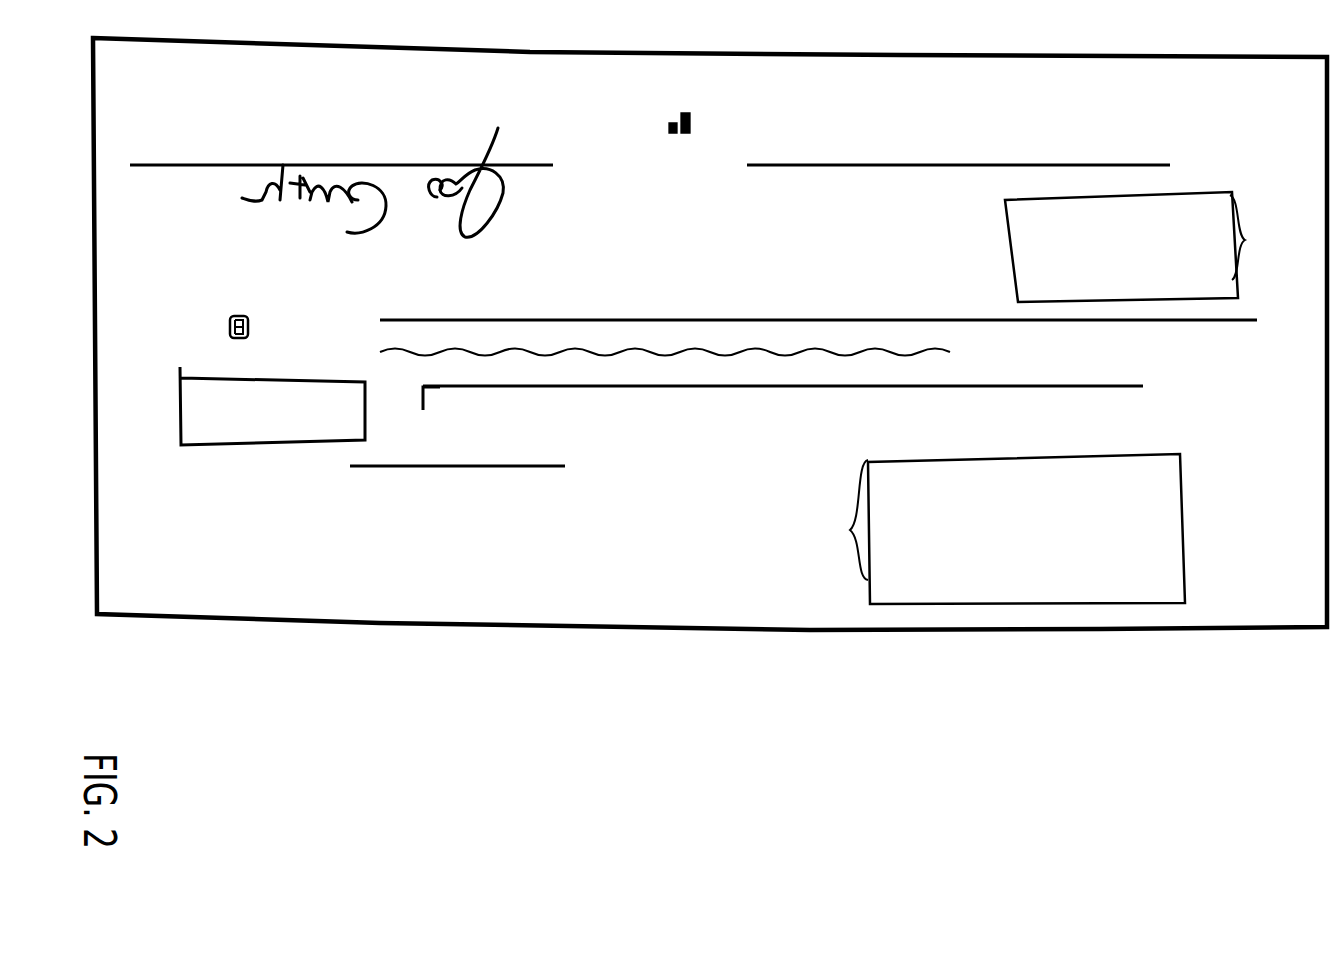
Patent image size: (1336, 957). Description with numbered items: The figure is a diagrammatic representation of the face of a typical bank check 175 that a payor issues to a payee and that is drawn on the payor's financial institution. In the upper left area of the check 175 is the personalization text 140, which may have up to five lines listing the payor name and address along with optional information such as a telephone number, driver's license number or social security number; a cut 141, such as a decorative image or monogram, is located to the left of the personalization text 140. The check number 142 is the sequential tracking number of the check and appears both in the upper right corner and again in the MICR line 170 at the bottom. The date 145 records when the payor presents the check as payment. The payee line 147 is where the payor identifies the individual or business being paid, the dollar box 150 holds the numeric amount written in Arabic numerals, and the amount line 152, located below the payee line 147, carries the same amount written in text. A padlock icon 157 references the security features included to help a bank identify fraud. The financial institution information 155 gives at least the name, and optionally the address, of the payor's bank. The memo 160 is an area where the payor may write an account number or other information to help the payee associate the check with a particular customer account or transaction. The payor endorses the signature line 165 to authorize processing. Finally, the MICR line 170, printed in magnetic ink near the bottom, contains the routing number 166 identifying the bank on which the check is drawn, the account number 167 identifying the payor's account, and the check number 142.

The check 175 is at (1233, 630).
The MICR line 170 is at (1243, 115).
The routing number 166 is at (1153, 96).
The account number 167 is at (821, 98).
The check number 142 is at (578, 106).
The signature line 165 is at (265, 196).
The memo 160 is at (1240, 172).
The financial institution information 155 is at (1245, 240).
The amount line 152 is at (1242, 340).
The padlock icon 157 is at (236, 316).
The dollar box 150 is at (220, 415).
The payee line 147 is at (1245, 398).
The personalization text 140 is at (848, 531).
The cut 141 is at (1250, 553).
The date 145 is at (480, 517).